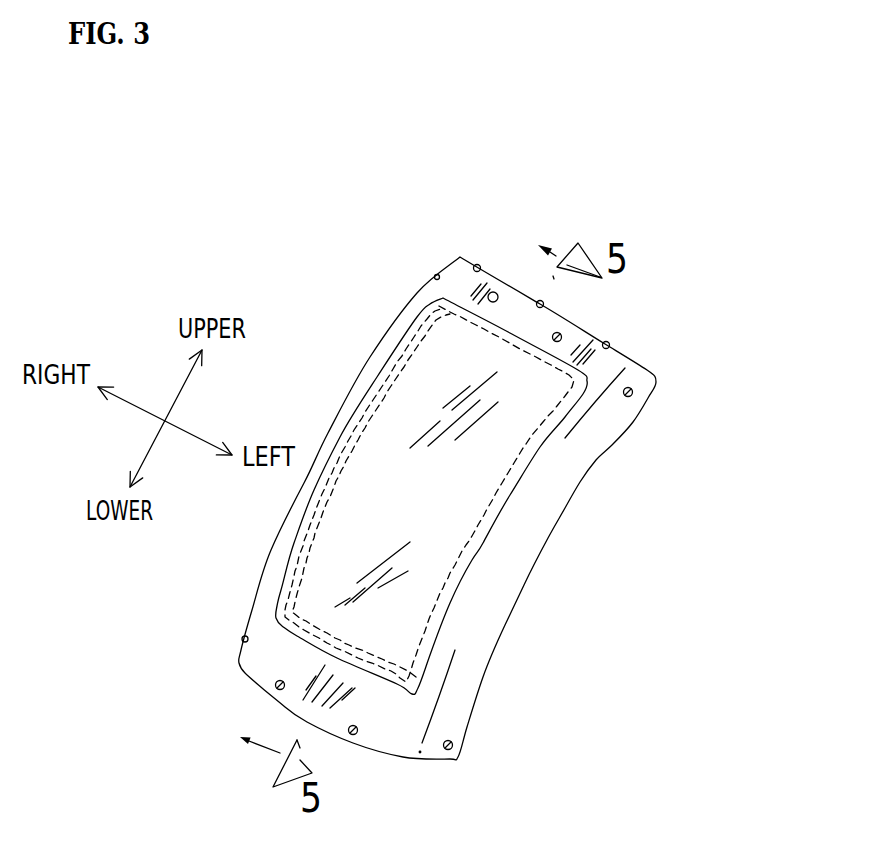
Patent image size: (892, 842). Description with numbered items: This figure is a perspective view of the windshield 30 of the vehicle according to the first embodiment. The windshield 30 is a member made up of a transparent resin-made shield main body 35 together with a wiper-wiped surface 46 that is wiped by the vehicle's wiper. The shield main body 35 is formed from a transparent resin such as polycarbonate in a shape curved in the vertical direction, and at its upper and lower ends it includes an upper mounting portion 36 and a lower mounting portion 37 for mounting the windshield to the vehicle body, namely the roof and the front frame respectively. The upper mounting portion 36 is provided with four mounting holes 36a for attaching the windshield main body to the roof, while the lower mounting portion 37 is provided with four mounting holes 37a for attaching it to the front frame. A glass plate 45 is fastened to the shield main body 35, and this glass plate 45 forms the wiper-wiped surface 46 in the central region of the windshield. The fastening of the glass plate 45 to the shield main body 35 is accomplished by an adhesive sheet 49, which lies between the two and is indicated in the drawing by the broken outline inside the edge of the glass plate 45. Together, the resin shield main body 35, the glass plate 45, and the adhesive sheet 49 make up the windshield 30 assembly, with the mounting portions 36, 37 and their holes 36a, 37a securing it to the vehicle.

The windshield 30 is at (733, 438).
The shield main body 35 is at (598, 455).
The upper mounting portion 36 is at (588, 290).
The mounting holes 36a is at (492, 293).
The lower mounting portion 37 is at (294, 726).
The mounting holes 37a is at (276, 685).
The glass plate 45 is at (500, 496).
The wiper-wiped surface 46 is at (398, 415).
The adhesive sheet 49 is at (442, 603).